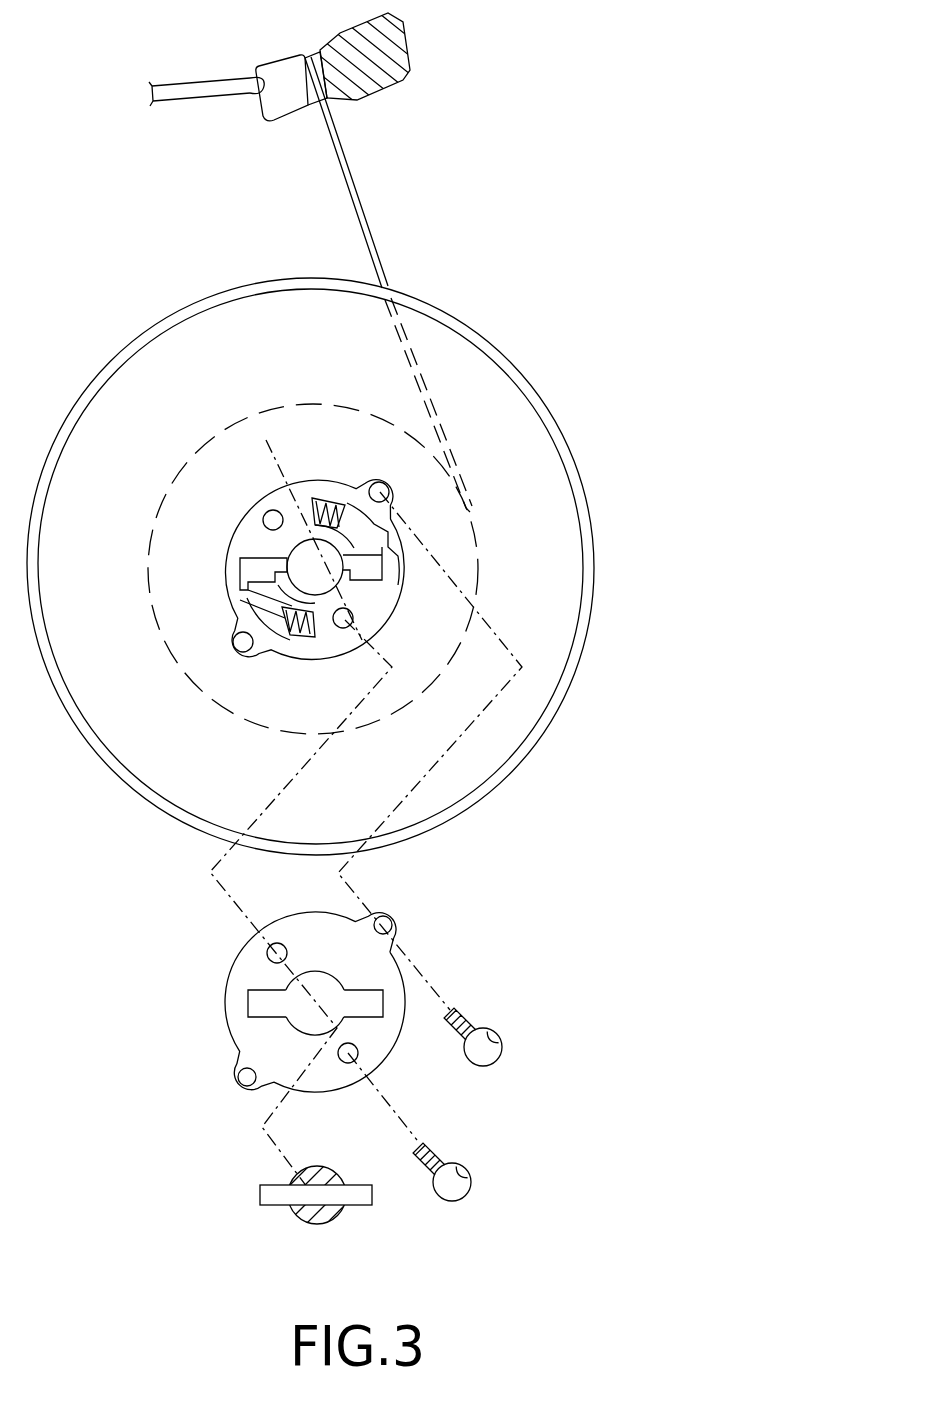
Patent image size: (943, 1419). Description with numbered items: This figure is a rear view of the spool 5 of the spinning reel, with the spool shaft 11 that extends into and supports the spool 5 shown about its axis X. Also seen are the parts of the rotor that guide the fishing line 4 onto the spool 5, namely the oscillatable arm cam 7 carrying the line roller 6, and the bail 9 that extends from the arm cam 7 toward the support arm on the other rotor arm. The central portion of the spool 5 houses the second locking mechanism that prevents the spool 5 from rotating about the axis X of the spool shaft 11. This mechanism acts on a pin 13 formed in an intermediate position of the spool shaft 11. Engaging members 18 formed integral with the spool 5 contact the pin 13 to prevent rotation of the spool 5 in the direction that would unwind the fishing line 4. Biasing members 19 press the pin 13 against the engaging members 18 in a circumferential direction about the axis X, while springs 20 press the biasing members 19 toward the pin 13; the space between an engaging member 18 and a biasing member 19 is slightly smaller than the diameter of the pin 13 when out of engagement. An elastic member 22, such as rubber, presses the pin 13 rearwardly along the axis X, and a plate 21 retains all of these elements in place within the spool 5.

The fishing line 4 is at (363, 210).
The spool 5 is at (560, 440).
The line roller 6 is at (293, 66).
The arm cam 7 is at (410, 60).
The bail 9 is at (195, 98).
The spool shaft 11 is at (337, 1217).
The pin 13 is at (262, 1192).
The engaging members 18 is at (243, 517).
The biasing members 19 is at (252, 590).
The springs 20 is at (316, 496).
The plate 21 is at (232, 982).
The elastic member 22 is at (243, 562).
The axis X is at (301, 528).